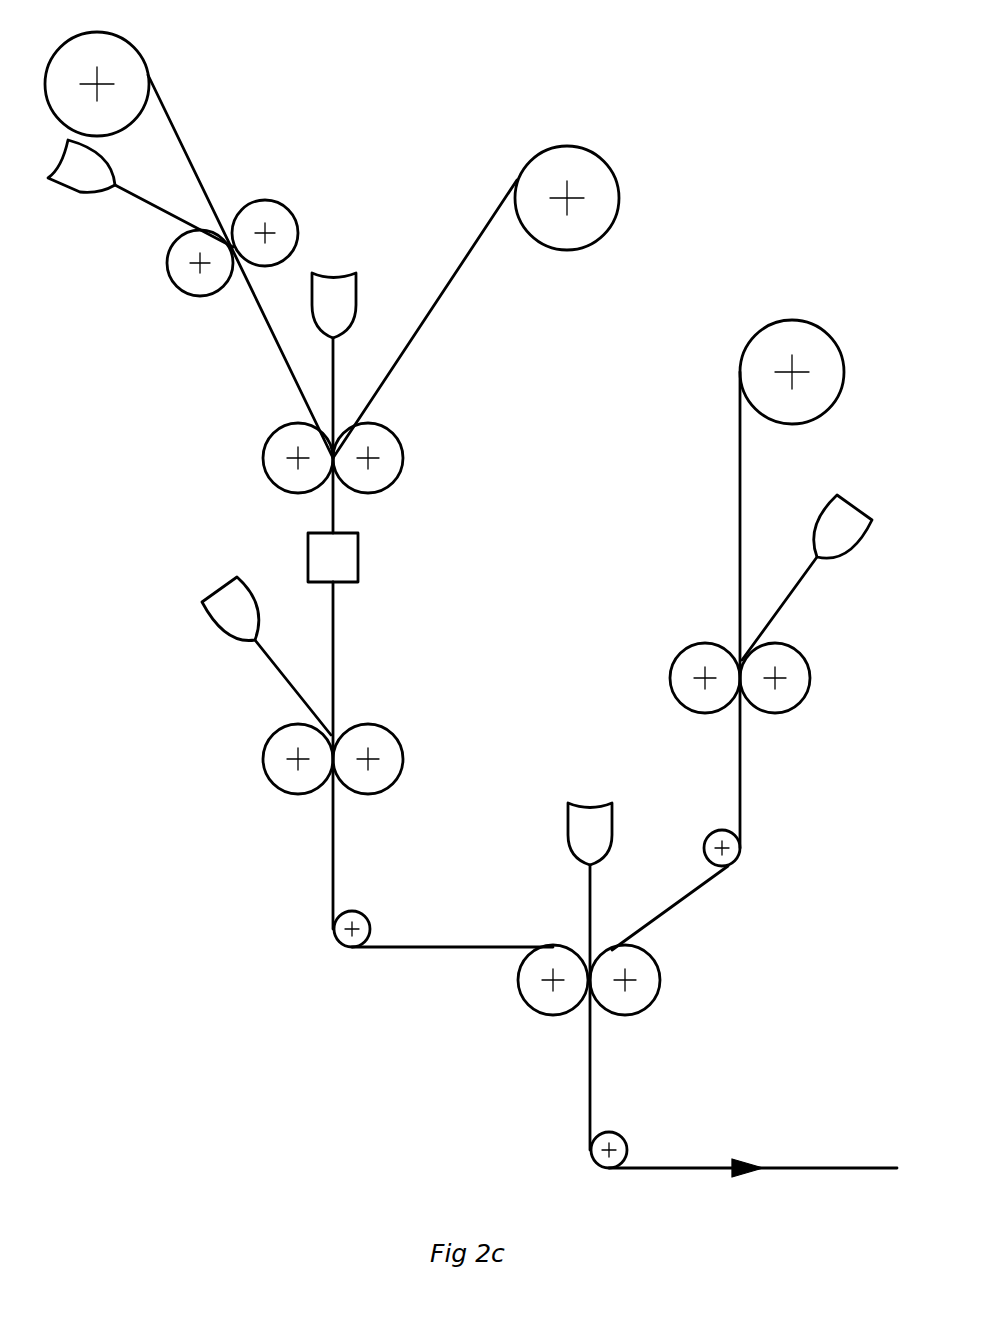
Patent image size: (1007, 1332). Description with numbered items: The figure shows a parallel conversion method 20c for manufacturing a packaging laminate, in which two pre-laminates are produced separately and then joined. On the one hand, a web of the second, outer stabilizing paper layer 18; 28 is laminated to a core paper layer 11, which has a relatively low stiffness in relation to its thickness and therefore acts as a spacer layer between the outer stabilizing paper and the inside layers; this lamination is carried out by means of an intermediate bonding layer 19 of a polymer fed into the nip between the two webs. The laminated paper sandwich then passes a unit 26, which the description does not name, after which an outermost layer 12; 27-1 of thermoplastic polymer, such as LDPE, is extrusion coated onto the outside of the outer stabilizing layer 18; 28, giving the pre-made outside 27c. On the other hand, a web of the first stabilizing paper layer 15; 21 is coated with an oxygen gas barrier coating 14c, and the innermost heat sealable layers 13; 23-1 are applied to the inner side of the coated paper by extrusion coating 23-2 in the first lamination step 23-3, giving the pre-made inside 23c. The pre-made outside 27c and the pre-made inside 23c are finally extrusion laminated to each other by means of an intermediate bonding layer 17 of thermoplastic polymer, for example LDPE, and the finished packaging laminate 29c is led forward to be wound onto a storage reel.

The second, outer stabilizing paper layer 18 is at (184, 229).
The second, outer stabilizing paper layer 28 is at (184, 229).
The core paper layer 11 is at (494, 299).
The intermediate bonding layer 19 is at (337, 372).
The treatment unit 26 is at (358, 557).
The first stabilizing paper layer 15 is at (784, 356).
The first stabilizing paper layer 21 is at (784, 356).
The oxygen gas barrier coating 14c is at (740, 510).
The extrusion coating 23-2 is at (869, 519).
The innermost heat sealable layer 13 is at (844, 608).
The innermost heat sealable layer 23-1 is at (793, 601).
The first lamination step 23-3 is at (773, 678).
The outermost layer 12 is at (262, 685).
The outermost layer 27-1 is at (285, 684).
The intermediate bonding layer 17 is at (589, 958).
The pre-made outside 27c is at (458, 947).
The pre-made inside 23c is at (692, 895).
The finished packaging laminate 29c is at (744, 1154).
The parallel conversion method 20c is at (190, 994).